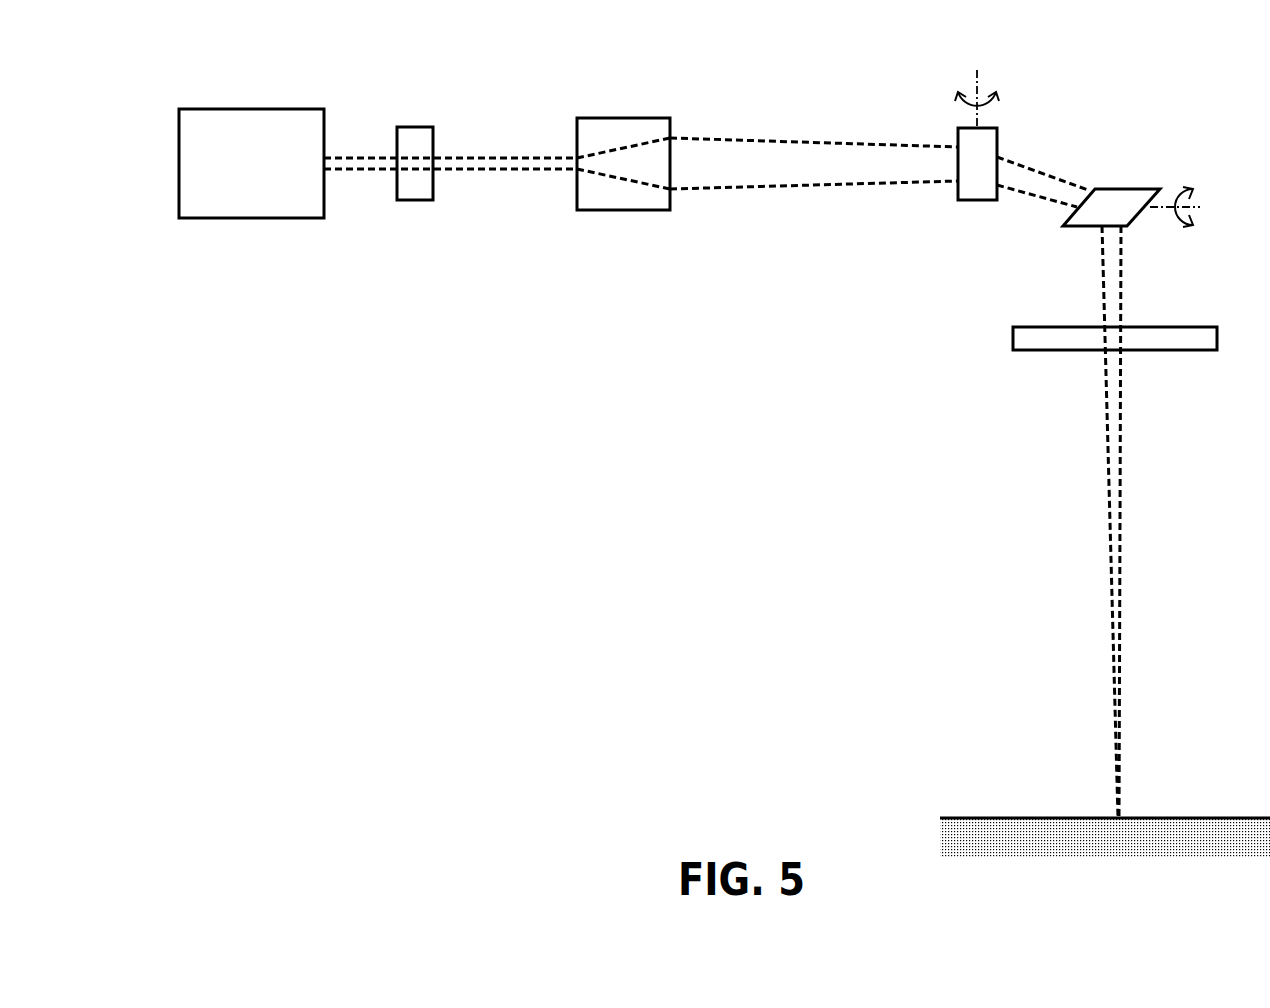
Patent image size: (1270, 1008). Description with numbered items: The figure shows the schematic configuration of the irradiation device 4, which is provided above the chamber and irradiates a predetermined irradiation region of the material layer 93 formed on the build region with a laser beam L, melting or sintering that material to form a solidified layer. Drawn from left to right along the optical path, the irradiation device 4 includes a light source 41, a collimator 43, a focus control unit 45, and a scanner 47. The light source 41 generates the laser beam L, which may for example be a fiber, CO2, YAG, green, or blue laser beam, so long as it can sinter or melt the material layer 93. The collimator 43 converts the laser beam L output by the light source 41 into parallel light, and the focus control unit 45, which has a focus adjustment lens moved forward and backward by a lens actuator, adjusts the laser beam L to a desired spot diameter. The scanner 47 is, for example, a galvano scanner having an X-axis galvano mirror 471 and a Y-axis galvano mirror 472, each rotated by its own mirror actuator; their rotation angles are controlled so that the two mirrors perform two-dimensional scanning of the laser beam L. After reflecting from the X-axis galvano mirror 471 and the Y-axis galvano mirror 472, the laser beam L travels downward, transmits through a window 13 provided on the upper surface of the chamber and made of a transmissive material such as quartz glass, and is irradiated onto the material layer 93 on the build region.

The irradiation device 4 is at (607, 412).
The light source 41 is at (215, 212).
The collimator 43 is at (422, 197).
The focus control unit 45 is at (591, 201).
The scanner 47 is at (1092, 90).
The X-axis galvano mirror 471 is at (975, 193).
The Y-axis galvano mirror 472 is at (1140, 193).
The window 13 is at (1033, 338).
The laser beam L is at (1122, 547).
The material layer 93 is at (1003, 828).